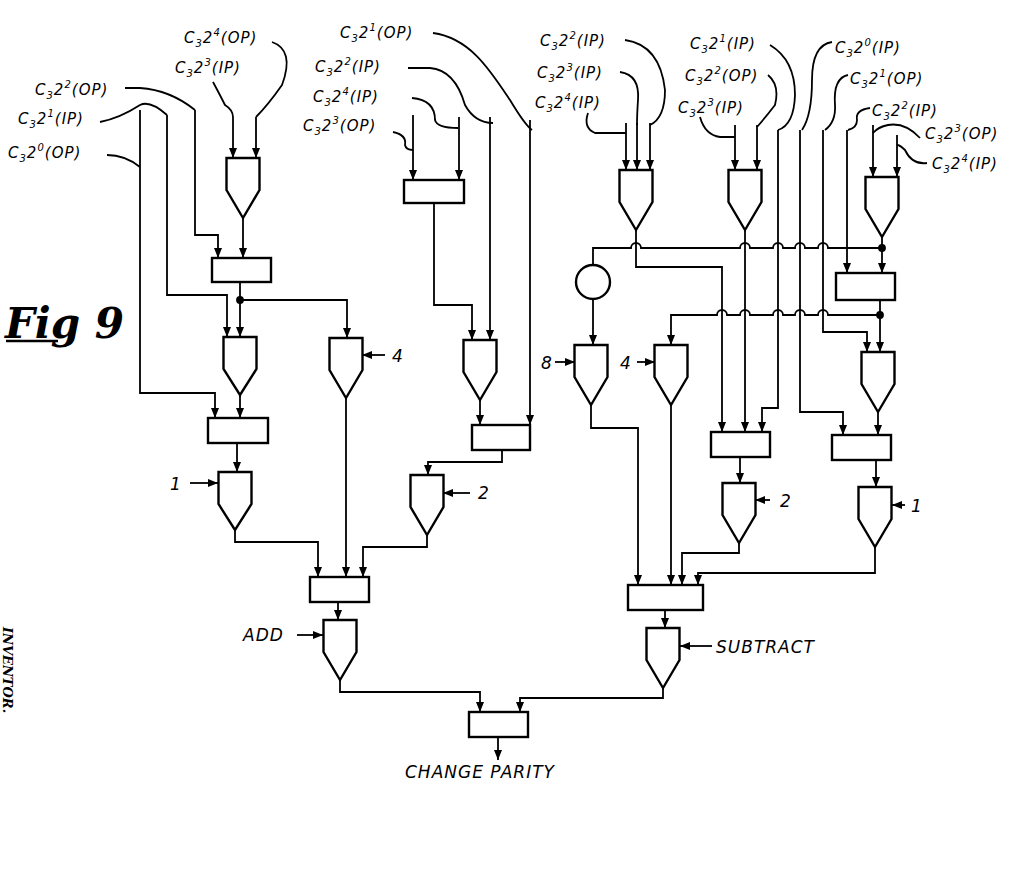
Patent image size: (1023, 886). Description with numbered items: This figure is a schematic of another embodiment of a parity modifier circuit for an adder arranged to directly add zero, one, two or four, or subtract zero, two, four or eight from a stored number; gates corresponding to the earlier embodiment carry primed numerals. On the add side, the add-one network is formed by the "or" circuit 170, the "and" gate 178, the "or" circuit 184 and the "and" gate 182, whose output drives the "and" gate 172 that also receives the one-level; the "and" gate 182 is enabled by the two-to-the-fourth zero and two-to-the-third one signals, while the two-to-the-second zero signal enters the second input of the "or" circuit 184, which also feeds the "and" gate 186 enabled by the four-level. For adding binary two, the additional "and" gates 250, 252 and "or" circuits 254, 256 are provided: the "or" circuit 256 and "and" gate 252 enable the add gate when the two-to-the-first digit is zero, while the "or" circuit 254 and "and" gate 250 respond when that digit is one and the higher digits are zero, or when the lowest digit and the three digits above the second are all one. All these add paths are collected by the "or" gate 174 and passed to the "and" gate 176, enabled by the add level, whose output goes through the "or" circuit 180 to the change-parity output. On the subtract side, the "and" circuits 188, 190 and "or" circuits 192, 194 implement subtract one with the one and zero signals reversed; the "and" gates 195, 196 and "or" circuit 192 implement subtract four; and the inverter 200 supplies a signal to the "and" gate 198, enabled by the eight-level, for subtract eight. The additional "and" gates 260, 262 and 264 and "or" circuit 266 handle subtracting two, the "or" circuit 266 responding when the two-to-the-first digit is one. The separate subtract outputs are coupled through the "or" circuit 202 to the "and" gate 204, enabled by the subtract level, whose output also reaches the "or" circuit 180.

The "and" gate 182 is at (260, 172).
The "or" circuit 184 is at (271, 268).
The "and" gate 178 is at (256, 360).
The "and" gate 186 is at (364, 337).
The "or" circuit 170 is at (268, 432).
The "and" gate 172 is at (252, 492).
The "or" circuit 254 is at (404, 192).
The "and" gate 250 is at (463, 366).
The "or" circuit 256 is at (530, 440).
The "and" gate 252 is at (443, 503).
The "or" gate 174 is at (369, 590).
The "and" gate 176 is at (356, 640).
The "or" circuit 180 is at (528, 722).
The "and" gate 264 is at (619, 185).
The "and" gate 260 is at (728, 185).
The inverter 200 is at (610, 283).
The "and" gate 198 is at (580, 385).
The "and" gate 196 is at (655, 385).
The "or" circuit 266 is at (770, 445).
The "and" gate 262 is at (755, 512).
The "or" circuit 194 is at (899, 202).
The "or" circuit 192 is at (895, 285).
The "and" circuit 188 is at (895, 375).
The "and" gate 195 is at (891, 450).
The "and" circuit 190 is at (892, 518).
The "or" circuit 202 is at (703, 597).
The "and" gate 204 is at (682, 662).